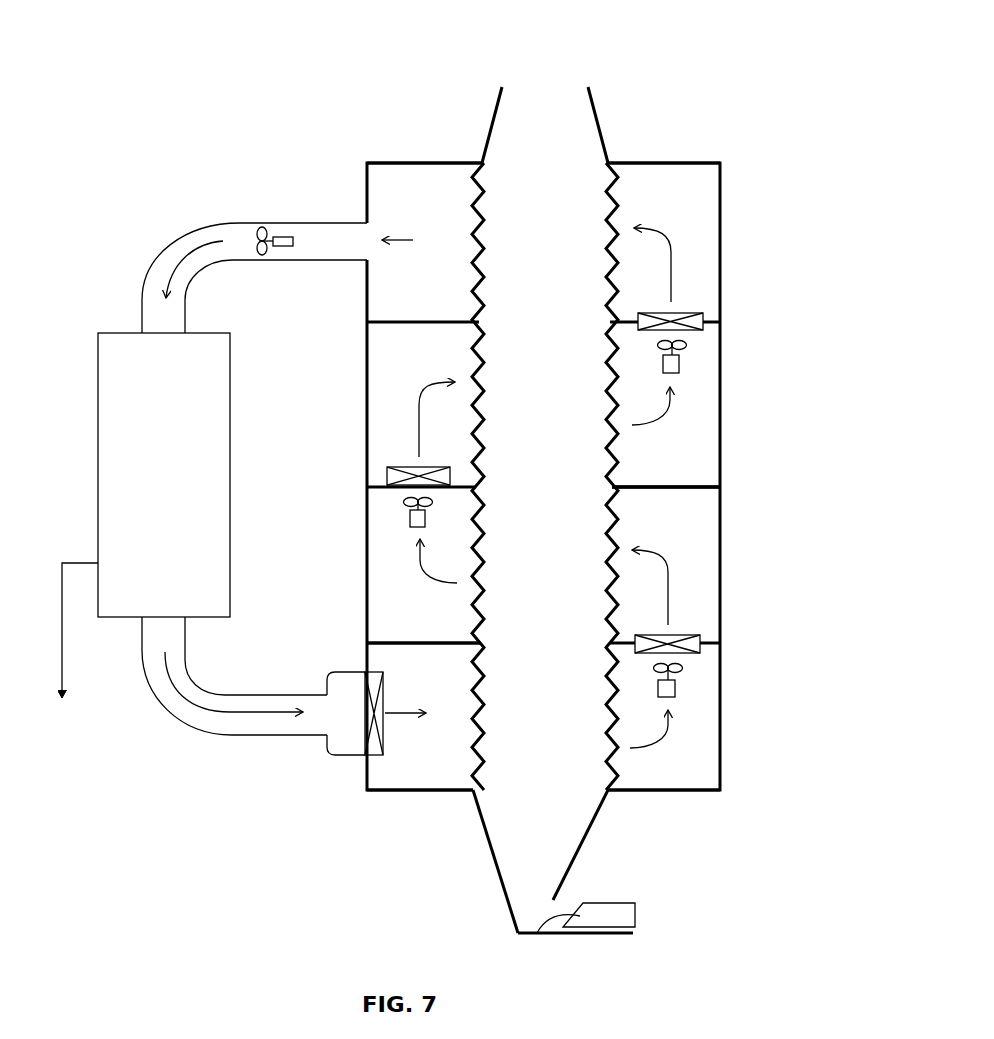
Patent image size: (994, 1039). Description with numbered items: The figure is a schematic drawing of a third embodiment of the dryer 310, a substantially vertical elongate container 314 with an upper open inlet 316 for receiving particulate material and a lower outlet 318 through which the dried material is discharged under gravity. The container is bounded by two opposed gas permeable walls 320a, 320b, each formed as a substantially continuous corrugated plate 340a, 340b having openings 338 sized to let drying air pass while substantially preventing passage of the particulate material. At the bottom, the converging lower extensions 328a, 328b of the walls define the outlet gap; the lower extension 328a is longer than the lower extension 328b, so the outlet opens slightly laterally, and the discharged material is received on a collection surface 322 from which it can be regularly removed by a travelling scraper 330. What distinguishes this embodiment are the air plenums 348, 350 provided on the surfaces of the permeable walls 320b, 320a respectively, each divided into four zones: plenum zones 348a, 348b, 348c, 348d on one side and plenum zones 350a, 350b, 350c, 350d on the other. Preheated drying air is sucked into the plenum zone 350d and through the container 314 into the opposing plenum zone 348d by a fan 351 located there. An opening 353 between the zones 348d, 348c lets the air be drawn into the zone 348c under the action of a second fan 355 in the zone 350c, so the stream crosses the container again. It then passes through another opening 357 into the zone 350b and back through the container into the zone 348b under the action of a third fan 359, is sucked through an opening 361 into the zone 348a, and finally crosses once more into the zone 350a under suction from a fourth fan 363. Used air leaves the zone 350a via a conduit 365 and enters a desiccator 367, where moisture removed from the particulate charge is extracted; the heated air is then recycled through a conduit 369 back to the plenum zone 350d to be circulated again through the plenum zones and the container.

The dryer 310 is at (693, 198).
The elongate container 314 is at (613, 448).
The upper open inlet 316 is at (543, 108).
The lower outlet 318 is at (550, 912).
The gas permeable wall 320a is at (473, 600).
The gas permeable wall 320b is at (613, 505).
The collection surface 322 is at (620, 933).
The converging lower extension 328a is at (497, 875).
The converging lower extension 328b is at (597, 830).
The travelling scraper 330 is at (627, 917).
The openings 338 is at (480, 198).
The corrugated plate 340a is at (473, 360).
The corrugated plate 340b is at (613, 475).
The air plenum 348 is at (722, 331).
The air plenum zone 348a is at (693, 243).
The air plenum zone 348b is at (700, 403).
The air plenum zone 348c is at (705, 533).
The air plenum zone 348d is at (697, 742).
The air plenum 350 is at (367, 433).
The air plenum zone 350a is at (389, 184).
The air plenum zone 350b is at (385, 343).
The air plenum zone 350c is at (386, 565).
The air plenum zone 350d is at (415, 777).
The fan 351 is at (695, 670).
The opening 353 is at (700, 635).
The second fan 355 is at (410, 520).
The opening 357 is at (387, 475).
The third fan 359 is at (697, 349).
The opening 361 is at (683, 313).
The fourth fan 363 is at (282, 236).
The conduit 365 is at (162, 265).
The desiccator 367 is at (127, 493).
The conduit 369 is at (230, 725).